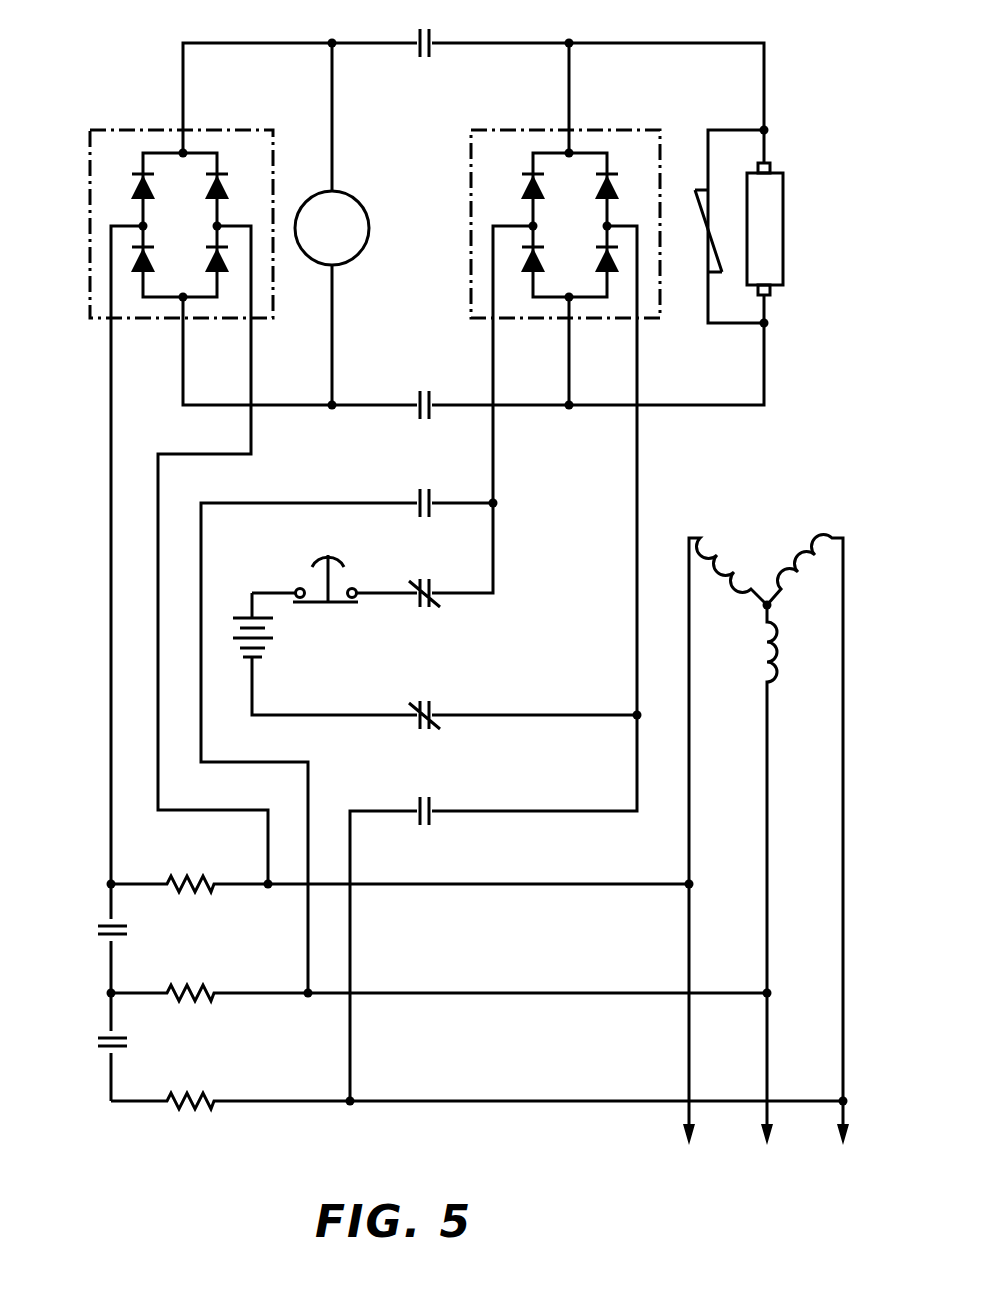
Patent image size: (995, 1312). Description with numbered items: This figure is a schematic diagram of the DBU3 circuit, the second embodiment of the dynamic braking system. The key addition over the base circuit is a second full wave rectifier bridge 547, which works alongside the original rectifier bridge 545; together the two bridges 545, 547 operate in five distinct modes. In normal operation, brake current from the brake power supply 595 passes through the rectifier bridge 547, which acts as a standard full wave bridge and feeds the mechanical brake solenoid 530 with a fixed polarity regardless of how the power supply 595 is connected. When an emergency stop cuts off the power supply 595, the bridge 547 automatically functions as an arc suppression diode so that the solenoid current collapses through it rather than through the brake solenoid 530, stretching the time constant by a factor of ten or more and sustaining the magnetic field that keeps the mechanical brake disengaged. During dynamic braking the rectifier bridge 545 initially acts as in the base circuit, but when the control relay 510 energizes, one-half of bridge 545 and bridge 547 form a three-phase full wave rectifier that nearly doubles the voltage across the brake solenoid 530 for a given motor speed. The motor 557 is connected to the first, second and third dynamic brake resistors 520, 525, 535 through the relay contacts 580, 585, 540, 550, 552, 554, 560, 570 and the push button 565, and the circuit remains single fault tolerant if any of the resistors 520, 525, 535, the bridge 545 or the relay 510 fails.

The CR-1 relay contact 580 is at (433, 36).
The rectifier bridge 545 is at (200, 153).
The second full wave rectifier bridge 547 is at (585, 153).
The control relay 510 is at (366, 212).
The mechanical brake solenoid 530 is at (778, 188).
The CR-2 relay contact 585 is at (404, 412).
The CR-3 relay contact 540 is at (432, 512).
The CR-4 relay contact 550 is at (418, 611).
The CR-5 relay contact 552 is at (416, 728).
The CR-6 relay contact 554 is at (432, 818).
The push button PB1 565 is at (296, 590).
The brake power supply 595 is at (249, 680).
The motor 557 is at (793, 537).
The dynamic brake resistor R1 520 is at (216, 892).
The dynamic brake resistor R2 525 is at (216, 1001).
The dynamic brake resistor R3 535 is at (216, 1109).
The motor relay contact MR-1 560 is at (106, 940).
The motor relay contact MR-2 570 is at (106, 1052).